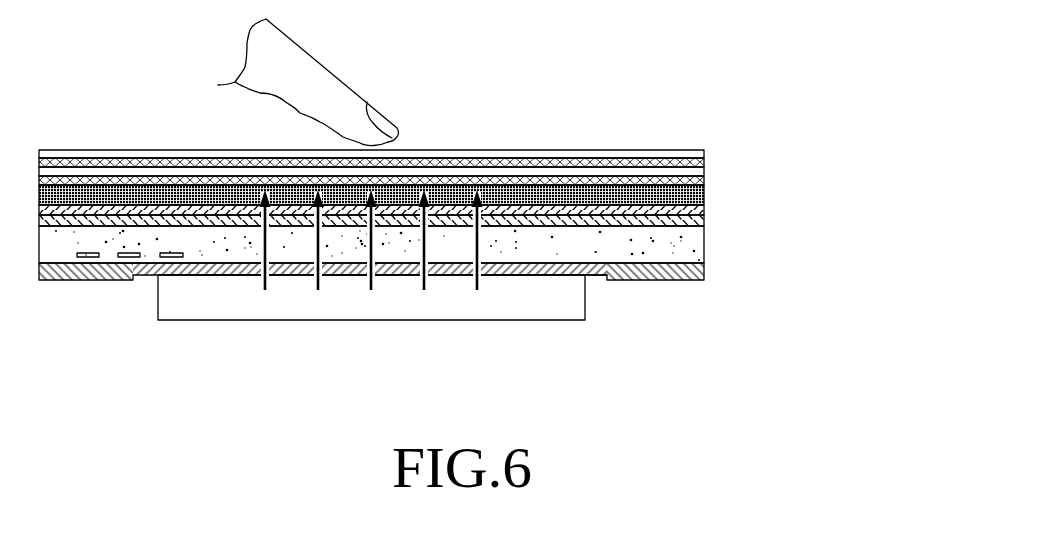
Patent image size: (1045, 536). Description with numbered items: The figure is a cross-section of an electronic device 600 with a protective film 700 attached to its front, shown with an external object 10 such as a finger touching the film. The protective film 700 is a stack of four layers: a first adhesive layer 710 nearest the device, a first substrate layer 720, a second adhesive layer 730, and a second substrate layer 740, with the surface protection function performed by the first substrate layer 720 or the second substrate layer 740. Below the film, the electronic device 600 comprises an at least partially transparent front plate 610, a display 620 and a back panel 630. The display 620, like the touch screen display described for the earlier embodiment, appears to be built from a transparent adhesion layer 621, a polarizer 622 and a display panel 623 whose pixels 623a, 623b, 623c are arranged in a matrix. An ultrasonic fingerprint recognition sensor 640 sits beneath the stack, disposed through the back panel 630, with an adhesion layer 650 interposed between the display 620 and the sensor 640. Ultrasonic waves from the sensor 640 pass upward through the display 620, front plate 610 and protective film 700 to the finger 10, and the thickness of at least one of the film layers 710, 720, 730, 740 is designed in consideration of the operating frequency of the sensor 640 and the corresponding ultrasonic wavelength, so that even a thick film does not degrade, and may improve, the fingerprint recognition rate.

The finger / user input object 10 is at (325, 78).
The protective film 700 is at (454, 106).
The first substrate layer 720 is at (617, 153).
The second adhesive layer 730 is at (667, 157).
The second substrate layer 740 is at (702, 170).
The first adhesive layer 710 is at (421, 157).
The electronic device 600 is at (485, 299).
The front plate 610 is at (695, 197).
The display 620 is at (454, 302).
The first sensing sublayer 621 is at (703, 208).
The second sensing sublayer 622 is at (702, 223).
The photosensitive layer 623 is at (422, 312).
The first photo sensor element 623a is at (87, 258).
The second photo sensor element 623b is at (130, 258).
The third photo sensor element 623c is at (168, 258).
The back panel 630 is at (703, 282).
The connection portion 650 is at (595, 277).
The ultrasonic fingerprint recognition sensor 640 is at (485, 346).